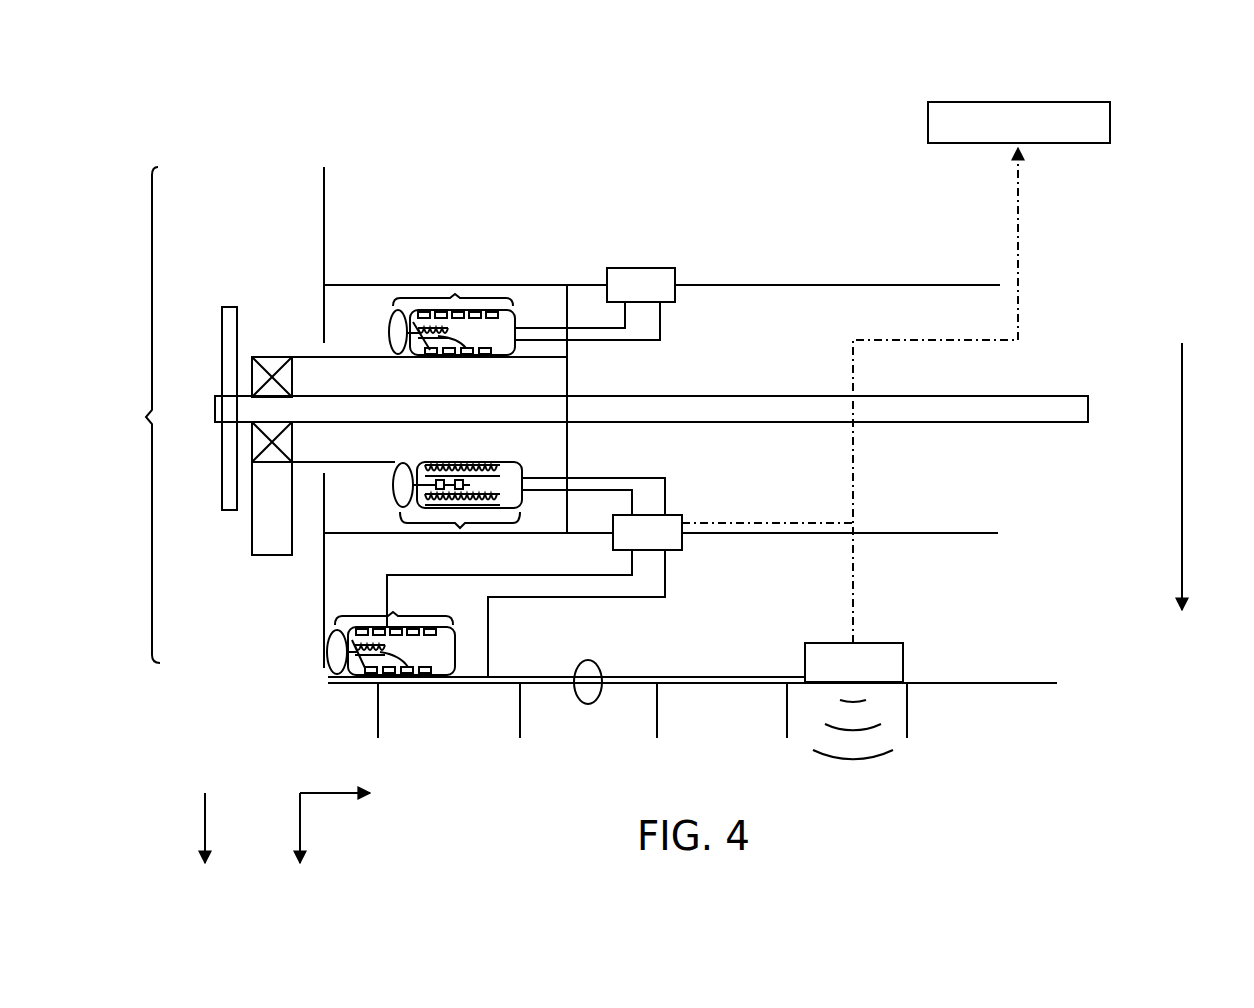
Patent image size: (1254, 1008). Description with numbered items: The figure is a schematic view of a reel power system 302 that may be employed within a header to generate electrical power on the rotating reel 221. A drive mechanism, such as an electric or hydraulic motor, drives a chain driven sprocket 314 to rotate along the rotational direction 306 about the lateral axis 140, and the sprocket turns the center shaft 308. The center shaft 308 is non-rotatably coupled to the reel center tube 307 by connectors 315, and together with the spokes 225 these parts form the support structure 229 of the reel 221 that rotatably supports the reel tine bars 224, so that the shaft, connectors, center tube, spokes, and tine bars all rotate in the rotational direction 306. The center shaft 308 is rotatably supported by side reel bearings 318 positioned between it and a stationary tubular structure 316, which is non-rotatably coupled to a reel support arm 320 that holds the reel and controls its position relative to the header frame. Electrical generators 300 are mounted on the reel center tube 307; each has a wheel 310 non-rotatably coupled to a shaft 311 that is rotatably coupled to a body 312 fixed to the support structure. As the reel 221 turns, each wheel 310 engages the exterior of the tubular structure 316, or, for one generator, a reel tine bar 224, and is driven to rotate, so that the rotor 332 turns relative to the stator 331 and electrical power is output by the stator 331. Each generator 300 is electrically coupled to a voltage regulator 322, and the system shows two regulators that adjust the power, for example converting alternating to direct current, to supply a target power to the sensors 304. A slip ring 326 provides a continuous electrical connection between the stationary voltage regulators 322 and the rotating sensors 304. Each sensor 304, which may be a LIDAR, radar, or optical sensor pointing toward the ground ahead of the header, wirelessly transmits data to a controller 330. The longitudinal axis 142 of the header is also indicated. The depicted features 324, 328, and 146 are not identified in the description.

The reel power system 302 is at (398, 130).
The spoke 225 is at (324, 253).
The support structure 229 is at (134, 415).
The chain driven sprocket 314 is at (230, 306).
The center shaft 308 is at (1015, 397).
The side reel bearings 318 is at (292, 372).
The reel support arm 320 is at (252, 540).
The tubular structure 316 is at (429, 442).
The connector 315 is at (568, 360).
The electrical generator 300 is at (455, 297).
The wheel 310 is at (390, 340).
The stator 331 is at (505, 313).
The rotor 332 is at (450, 340).
The shaft 311 is at (415, 338).
The body 312 is at (500, 355).
The voltage regulator 322 is at (640, 268).
The wiring 324 is at (510, 600).
The reel center tube 307 is at (930, 533).
The communication link 328 is at (1020, 247).
The controller 330 is at (1020, 100).
The reel 221 is at (832, 223).
The rotational direction 306 is at (1185, 470).
The sensor 304 is at (905, 643).
The reel tine bar 224 is at (985, 682).
The slip ring 326 is at (598, 700).
The downward direction 146 is at (205, 820).
The longitudinal axis 142 is at (300, 823).
The lateral axis 140 is at (330, 795).